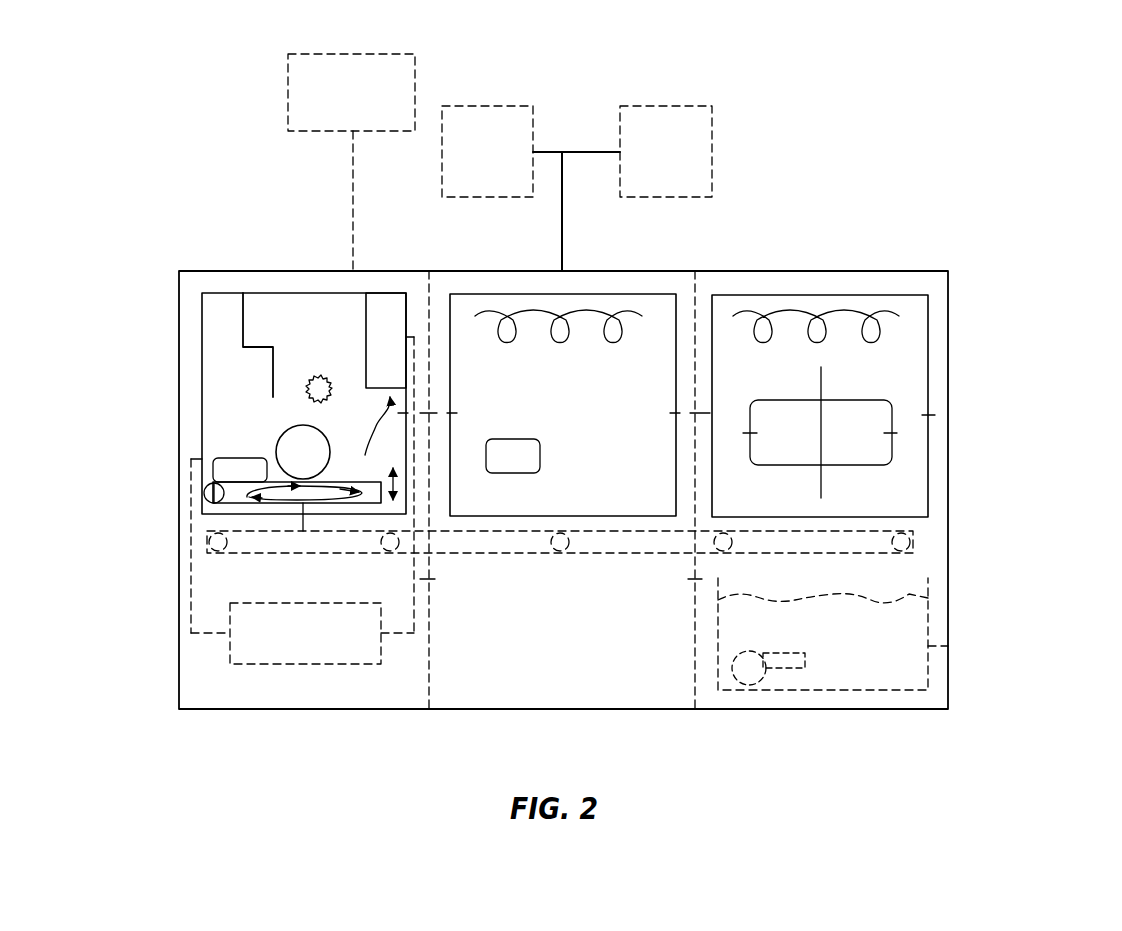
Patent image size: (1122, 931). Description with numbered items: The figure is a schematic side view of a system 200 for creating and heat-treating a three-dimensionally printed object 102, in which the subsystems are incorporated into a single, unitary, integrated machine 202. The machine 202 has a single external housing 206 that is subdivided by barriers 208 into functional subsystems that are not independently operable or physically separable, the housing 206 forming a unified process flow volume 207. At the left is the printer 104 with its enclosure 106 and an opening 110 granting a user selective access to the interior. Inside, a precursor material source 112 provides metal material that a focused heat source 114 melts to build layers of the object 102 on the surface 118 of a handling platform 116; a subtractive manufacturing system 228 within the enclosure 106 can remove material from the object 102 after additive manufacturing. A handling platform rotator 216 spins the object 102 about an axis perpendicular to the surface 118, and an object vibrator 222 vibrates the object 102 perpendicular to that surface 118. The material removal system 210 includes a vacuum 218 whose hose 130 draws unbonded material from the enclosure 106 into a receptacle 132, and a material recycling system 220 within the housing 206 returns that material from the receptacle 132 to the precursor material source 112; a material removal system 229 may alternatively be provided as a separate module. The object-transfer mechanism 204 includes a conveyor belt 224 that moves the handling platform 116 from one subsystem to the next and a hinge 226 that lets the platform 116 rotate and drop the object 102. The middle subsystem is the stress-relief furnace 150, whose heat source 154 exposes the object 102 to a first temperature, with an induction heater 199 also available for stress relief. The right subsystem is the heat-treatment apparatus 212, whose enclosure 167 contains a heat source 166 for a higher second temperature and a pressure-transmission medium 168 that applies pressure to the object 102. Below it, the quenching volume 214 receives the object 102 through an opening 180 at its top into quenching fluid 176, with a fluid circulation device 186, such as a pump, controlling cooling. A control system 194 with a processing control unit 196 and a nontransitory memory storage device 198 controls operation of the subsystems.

The system 200 is at (235, 173).
The machine 202 is at (811, 271).
The barriers 208 is at (428, 648).
The material removal system 229 is at (336, 106).
The control system 194 is at (497, 105).
The processing control unit 196 is at (471, 163).
The nontransitory memory storage device 198 is at (651, 163).
The external housing 206 is at (628, 263).
The material removal system 210 is at (450, 230).
The 3D printer 104 is at (186, 322).
The enclosure 106 is at (279, 293).
The opening 110 is at (230, 375).
The subtractive manufacturing system 228 is at (241, 318).
The focused heat source 114 is at (322, 373).
The receptacle 132 is at (393, 324).
The hose 130 is at (365, 455).
The vacuum 218 is at (398, 397).
The 3D-printed object 102 is at (287, 462).
The precursor material source 112 is at (210, 456).
The handling platform 116 is at (231, 494).
The hinge 226 is at (205, 484).
The handling platform rotator 216 is at (345, 503).
The object vibrator 222 is at (391, 478).
The surface 118 is at (337, 478).
The conveyor belt 224 is at (461, 560).
The object-transfer mechanism 204 is at (515, 556).
The material recycling system 220 is at (289, 646).
The stress-relief furnace 150 is at (606, 516).
The heat source 154 is at (614, 349).
The induction heater 199 is at (497, 468).
The enclosure 167 is at (867, 296).
The heat source 166 is at (875, 349).
The pressure-transmission medium 168 is at (805, 443).
The heat-treatment apparatus 212 is at (938, 385).
The unified process flow volume 207 is at (1028, 506).
The quenching fluid 176 is at (810, 642).
The opening 180 is at (787, 584).
The fluid circulation device 186 is at (750, 676).
The quenching volume 214 is at (936, 619).